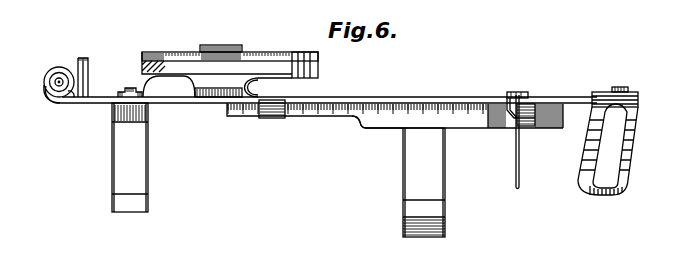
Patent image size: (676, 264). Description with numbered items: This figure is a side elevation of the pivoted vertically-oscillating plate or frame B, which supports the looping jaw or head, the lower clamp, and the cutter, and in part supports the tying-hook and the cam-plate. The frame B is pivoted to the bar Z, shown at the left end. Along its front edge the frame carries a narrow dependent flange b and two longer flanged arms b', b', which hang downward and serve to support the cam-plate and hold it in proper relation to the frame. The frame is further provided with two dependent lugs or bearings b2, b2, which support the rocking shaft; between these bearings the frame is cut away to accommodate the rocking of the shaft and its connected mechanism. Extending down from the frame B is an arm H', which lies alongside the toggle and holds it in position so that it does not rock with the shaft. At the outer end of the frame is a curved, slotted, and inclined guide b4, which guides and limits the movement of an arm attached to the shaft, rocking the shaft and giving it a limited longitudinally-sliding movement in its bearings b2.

The bar Z is at (42, 83).
The frame B is at (383, 78).
The dependent flange b is at (377, 132).
The flanged arms b' is at (278, 170).
The dependent lugs or bearings b2 is at (284, 112).
The arm H' is at (503, 142).
The curved, slotted, and inclined guide b4 is at (614, 141).